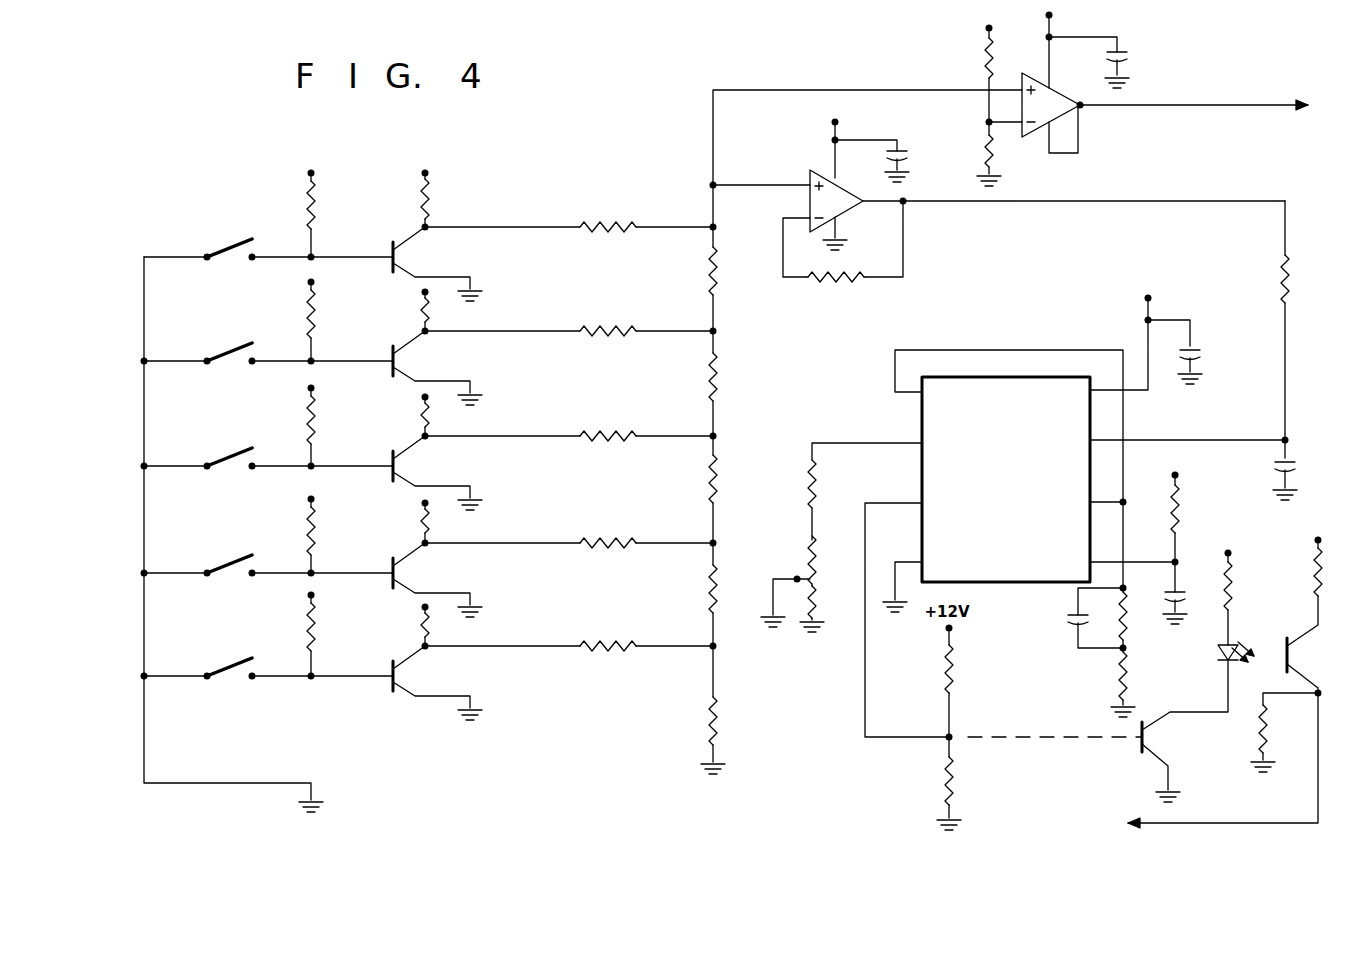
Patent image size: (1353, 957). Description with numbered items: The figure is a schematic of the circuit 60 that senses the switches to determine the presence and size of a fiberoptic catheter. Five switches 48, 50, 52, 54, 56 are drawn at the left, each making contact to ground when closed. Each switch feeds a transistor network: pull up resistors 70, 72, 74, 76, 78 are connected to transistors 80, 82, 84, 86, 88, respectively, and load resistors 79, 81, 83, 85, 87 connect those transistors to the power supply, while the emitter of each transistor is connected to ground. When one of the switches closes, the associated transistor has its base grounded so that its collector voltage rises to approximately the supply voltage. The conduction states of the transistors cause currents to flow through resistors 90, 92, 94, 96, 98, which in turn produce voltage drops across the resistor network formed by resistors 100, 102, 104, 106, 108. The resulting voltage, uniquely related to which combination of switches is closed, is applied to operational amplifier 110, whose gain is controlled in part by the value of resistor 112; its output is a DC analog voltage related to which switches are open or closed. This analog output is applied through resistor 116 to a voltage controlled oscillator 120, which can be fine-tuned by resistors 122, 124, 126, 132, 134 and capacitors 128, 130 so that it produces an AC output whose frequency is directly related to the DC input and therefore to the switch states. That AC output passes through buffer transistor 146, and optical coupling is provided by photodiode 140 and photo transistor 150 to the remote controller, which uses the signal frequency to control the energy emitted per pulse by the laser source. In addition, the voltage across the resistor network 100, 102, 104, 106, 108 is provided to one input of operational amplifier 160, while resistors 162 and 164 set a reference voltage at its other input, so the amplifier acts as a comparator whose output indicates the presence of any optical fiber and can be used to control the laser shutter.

The switch 48 is at (234, 243).
The switch 50 is at (234, 350).
The switch 52 is at (234, 452).
The switch 54 is at (234, 559).
The switch 56 is at (234, 662).
The circuit 60 is at (665, 178).
The pull up resistor 70 is at (318, 206).
The pull up resistor 72 is at (318, 312).
The pull up resistor 74 is at (318, 416).
The pull up resistor 76 is at (318, 522).
The pull up resistor 78 is at (318, 630).
The load resistor 79 is at (433, 198).
The transistor 80 is at (438, 260).
The load resistor 81 is at (430, 306).
The transistor 82 is at (438, 364).
The load resistor 83 is at (430, 412).
The transistor 84 is at (438, 469).
The load resistor 85 is at (430, 518).
The transistor 86 is at (438, 576).
The load resistor 87 is at (430, 624).
The transistor 88 is at (438, 679).
The resistor 90 is at (590, 240).
The resistor 92 is at (594, 344).
The resistor 94 is at (594, 449).
The resistor 96 is at (594, 555).
The resistor 98 is at (597, 658).
The resistor 100 is at (721, 288).
The resistor 102 is at (728, 394).
The resistor 104 is at (728, 498).
The resistor 106 is at (724, 586).
The resistor 108 is at (722, 720).
The operational amplifier 110 is at (842, 214).
The resistor 112 is at (818, 290).
The resistor 116 is at (1278, 283).
The voltage controlled oscillator 120 is at (1021, 558).
The resistor 122 is at (816, 568).
The resistor 124 is at (822, 498).
The resistor 126 is at (1182, 510).
The capacitor 128 is at (1205, 580).
The capacitor 130 is at (1072, 618).
The resistor 132 is at (1134, 628).
The resistor 134 is at (1130, 680).
The photodiode 140 is at (1242, 648).
The buffer transistor 146 is at (1182, 752).
The photo transistor 150 is at (1322, 666).
The operational amplifier 160 is at (1062, 84).
The resistor 162 is at (985, 54).
The resistor 164 is at (1000, 160).